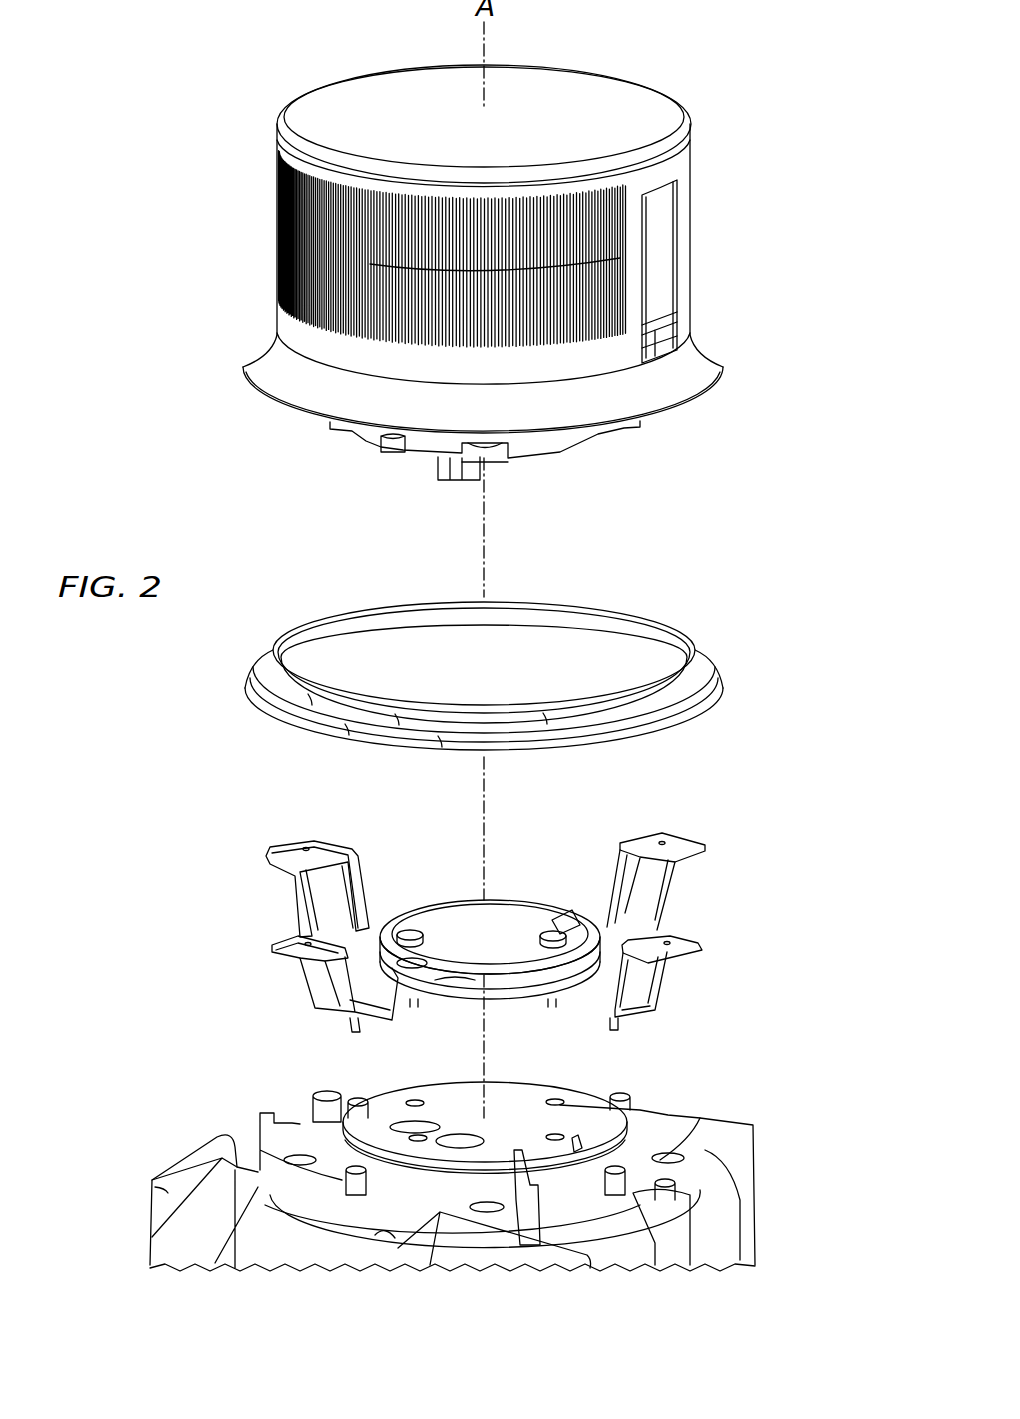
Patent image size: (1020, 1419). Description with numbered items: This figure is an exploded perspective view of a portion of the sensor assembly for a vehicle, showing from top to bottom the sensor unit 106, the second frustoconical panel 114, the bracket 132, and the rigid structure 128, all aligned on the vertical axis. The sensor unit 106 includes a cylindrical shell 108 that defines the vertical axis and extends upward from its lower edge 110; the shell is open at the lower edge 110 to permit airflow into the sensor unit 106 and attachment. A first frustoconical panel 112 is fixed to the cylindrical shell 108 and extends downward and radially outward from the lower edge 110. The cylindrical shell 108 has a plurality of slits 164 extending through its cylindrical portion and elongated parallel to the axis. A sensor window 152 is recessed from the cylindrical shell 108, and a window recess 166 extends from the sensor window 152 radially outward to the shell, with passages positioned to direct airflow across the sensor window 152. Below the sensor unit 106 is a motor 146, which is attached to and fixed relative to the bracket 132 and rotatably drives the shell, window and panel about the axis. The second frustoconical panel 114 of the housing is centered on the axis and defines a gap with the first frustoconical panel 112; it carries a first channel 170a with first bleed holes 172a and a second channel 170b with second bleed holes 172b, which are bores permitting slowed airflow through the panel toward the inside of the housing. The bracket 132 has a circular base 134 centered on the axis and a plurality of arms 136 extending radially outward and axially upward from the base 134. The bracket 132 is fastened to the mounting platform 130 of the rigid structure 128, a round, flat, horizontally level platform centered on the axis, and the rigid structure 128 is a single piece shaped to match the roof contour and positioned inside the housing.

The sensor unit 106 is at (603, 70).
The cylindrical shell 108 is at (345, 105).
The lower edge 110 is at (305, 366).
The first frustoconical panel 112 is at (327, 392).
The second frustoconical panel 114 is at (660, 614).
The rigid structure 128 is at (675, 1142).
The mounting platform 130 is at (515, 1105).
The bracket 132 is at (690, 895).
The circular base 134 is at (520, 897).
The arms 136 is at (678, 846).
The motor 146 is at (565, 437).
The sensor window 152 is at (660, 240).
The slits 164 is at (286, 197).
The window recesses 166 is at (690, 332).
The first channel 170a is at (545, 717).
The second channel 170b is at (570, 740).
The first bleed holes 172a is at (485, 723).
The second bleed holes 172b is at (265, 702).